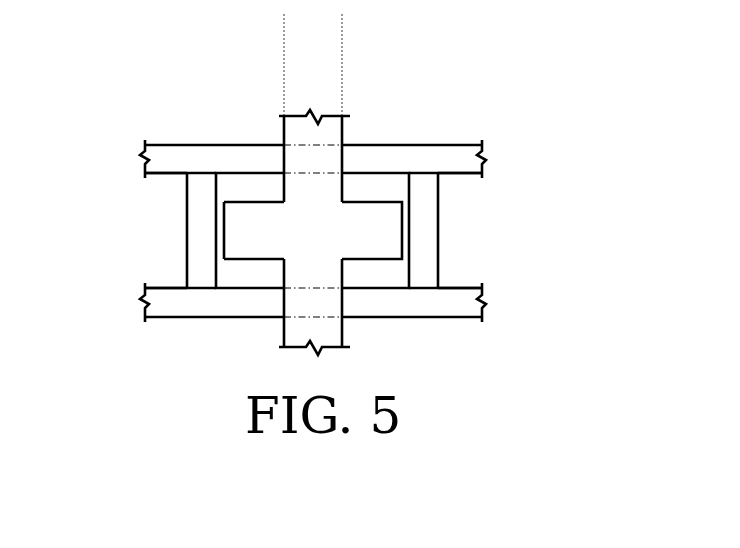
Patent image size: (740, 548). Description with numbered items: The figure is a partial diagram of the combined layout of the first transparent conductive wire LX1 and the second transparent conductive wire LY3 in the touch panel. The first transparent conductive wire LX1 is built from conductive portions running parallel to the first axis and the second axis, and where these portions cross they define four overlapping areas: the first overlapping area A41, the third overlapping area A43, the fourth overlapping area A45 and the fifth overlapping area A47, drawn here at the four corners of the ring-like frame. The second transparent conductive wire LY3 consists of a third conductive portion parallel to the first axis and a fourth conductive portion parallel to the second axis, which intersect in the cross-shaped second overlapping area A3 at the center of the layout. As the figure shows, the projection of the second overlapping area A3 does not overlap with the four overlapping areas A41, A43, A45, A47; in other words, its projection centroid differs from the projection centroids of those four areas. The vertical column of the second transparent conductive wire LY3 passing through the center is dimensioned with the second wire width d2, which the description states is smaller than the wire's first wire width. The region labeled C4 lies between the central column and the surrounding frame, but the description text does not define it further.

The fourth overlapping area A45 is at (176, 145).
The first overlapping area A41 is at (451, 146).
The fifth overlapping area A47 is at (176, 318).
The third overlapping area A43 is at (452, 319).
The second overlapping area A3 is at (377, 232).
The channel region between column and side wall C4 is at (334, 177).
The first transparent conductive wire LX1 is at (587, 227).
The second transparent conductive wire LY3 is at (319, 70).
The second wire width d2 is at (313, 58).